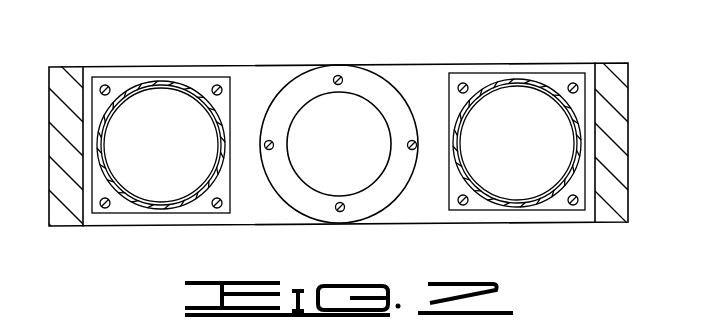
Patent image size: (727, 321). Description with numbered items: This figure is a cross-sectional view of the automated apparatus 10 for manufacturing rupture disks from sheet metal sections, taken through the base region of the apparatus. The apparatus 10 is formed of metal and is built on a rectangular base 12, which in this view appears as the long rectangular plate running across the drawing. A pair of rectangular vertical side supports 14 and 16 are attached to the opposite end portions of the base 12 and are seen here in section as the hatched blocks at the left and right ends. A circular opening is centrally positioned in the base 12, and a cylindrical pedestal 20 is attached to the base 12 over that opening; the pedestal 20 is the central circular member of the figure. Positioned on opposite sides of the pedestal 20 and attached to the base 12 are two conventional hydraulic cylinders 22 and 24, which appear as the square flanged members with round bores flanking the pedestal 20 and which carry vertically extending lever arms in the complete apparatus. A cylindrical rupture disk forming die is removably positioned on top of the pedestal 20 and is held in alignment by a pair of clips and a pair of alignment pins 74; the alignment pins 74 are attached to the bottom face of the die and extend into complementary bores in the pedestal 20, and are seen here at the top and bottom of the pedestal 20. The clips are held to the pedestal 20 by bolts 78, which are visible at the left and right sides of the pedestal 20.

The automated apparatus 10 is at (578, 52).
The rectangular base 12 is at (258, 77).
The vertical side support 14 is at (68, 126).
The vertical side support 16 is at (617, 125).
The cylindrical pedestal 20 is at (392, 83).
The hydraulic cylinder 22 is at (157, 77).
The hydraulic cylinder 24 is at (525, 73).
The alignment pins 74 is at (340, 78).
The bolts 78 is at (415, 142).